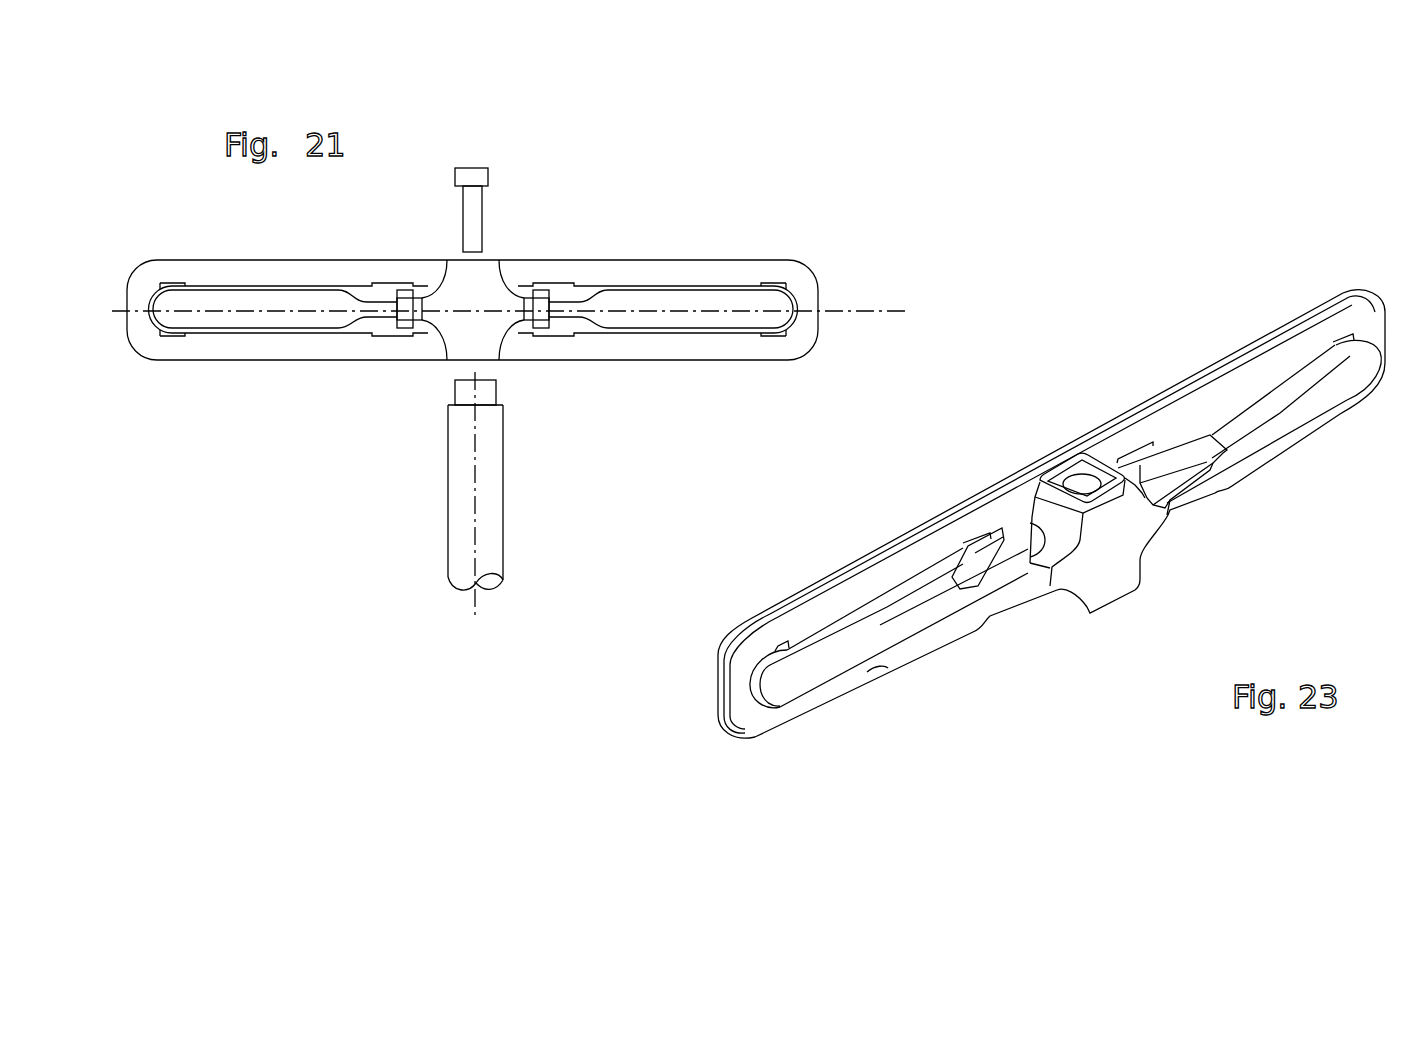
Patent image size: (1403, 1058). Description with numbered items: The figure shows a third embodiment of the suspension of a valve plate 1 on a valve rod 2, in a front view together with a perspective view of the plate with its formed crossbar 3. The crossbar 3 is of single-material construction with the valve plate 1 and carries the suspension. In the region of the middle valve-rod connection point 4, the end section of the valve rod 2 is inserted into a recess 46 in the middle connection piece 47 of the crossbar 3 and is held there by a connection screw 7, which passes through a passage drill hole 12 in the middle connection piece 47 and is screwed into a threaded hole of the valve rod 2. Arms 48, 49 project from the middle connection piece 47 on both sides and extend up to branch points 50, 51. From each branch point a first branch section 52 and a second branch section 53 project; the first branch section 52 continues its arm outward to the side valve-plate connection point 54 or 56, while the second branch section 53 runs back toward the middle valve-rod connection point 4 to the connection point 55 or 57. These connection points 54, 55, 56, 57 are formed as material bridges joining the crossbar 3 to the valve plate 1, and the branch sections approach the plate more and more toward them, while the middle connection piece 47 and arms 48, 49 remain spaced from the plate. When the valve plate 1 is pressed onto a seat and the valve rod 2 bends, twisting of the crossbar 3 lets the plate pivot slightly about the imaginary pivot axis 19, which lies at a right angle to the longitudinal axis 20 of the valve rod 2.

In FIG. 21, the valve plate 1 is at (226, 366).
In FIG. 23, the valve plate 1 is at (765, 746).
In FIG. 21, the valve rod 2 is at (517, 500).
In FIG. 21, the crossbar 3 is at (312, 338).
In FIG. 23, the crossbar 3 is at (975, 649).
In FIG. 23, the middle valve-rod connection point 4 is at (1062, 460).
In FIG. 21, the connection screw 7 is at (475, 220).
In FIG. 23, the passage drill hole 12 is at (1095, 485).
In FIG. 21, the pivot axis 19 is at (862, 306).
In FIG. 21, the longitudinal axis 20 is at (475, 490).
In FIG. 23, the recess 46 is at (1081, 466).
In FIG. 21, the middle connection piece 47 is at (493, 295).
In FIG. 23, the middle connection piece 47 is at (1109, 588).
In FIG. 21, the arm 48 is at (380, 303).
In FIG. 23, the arm 48 is at (1023, 595).
In FIG. 21, the arm 49 is at (568, 307).
In FIG. 23, the arm 49 is at (1193, 500).
In FIG. 23, the branch point 50 is at (953, 633).
In FIG. 23, the branch point 51 is at (1267, 456).
In FIG. 23, the first branch section 52 is at (843, 650).
In FIG. 23, the second branch section 53 is at (950, 563).
In FIG. 23, the side valve-plate connection point 54 is at (774, 647).
In FIG. 23, the side valve-plate connection point 55 is at (985, 527).
In FIG. 23, the side valve-plate connection point 56 is at (1355, 330).
In FIG. 23, the side valve-plate connection point 57 is at (1148, 440).